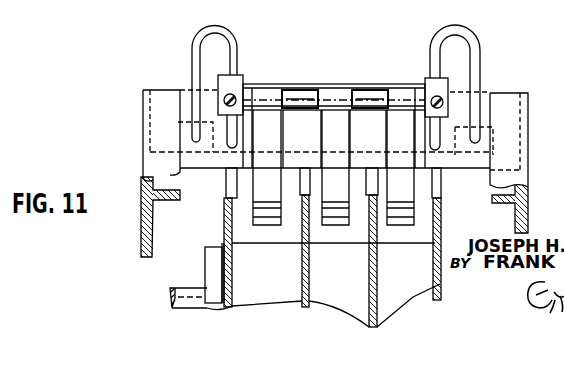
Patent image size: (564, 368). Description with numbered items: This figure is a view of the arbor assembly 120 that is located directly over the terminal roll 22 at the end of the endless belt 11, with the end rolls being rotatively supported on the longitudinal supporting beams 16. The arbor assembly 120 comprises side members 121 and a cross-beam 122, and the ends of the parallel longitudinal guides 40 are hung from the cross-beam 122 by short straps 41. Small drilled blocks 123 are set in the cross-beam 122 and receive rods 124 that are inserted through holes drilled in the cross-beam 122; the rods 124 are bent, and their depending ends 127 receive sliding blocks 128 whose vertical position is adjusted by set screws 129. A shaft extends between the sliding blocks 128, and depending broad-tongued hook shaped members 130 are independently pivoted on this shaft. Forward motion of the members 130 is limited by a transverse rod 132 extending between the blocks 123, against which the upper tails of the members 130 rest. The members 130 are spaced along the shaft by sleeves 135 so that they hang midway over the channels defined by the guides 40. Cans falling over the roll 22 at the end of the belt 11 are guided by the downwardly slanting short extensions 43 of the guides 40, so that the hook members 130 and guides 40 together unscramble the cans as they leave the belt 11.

The endless belt 11 is at (222, 243).
The longitudinal supporting beam 16 is at (160, 200).
The terminal roll 22 is at (210, 255).
The parallel longitudinal guide 40 is at (238, 210).
The short strap 41 is at (230, 180).
The downwardly slanting short extension 43 is at (231, 277).
The arbor assembly 120 is at (303, 42).
The side member 121 is at (147, 159).
The cross-beam 122 is at (488, 97).
The drilled block 123 is at (150, 133).
The rod 124 is at (479, 44).
The depending end 127 is at (432, 140).
The sliding block 128 is at (220, 82).
The set screw 129 is at (226, 97).
The hook shaped member 130 is at (396, 128).
The transverse rod 132 is at (313, 84).
The sleeve 135 is at (297, 97).